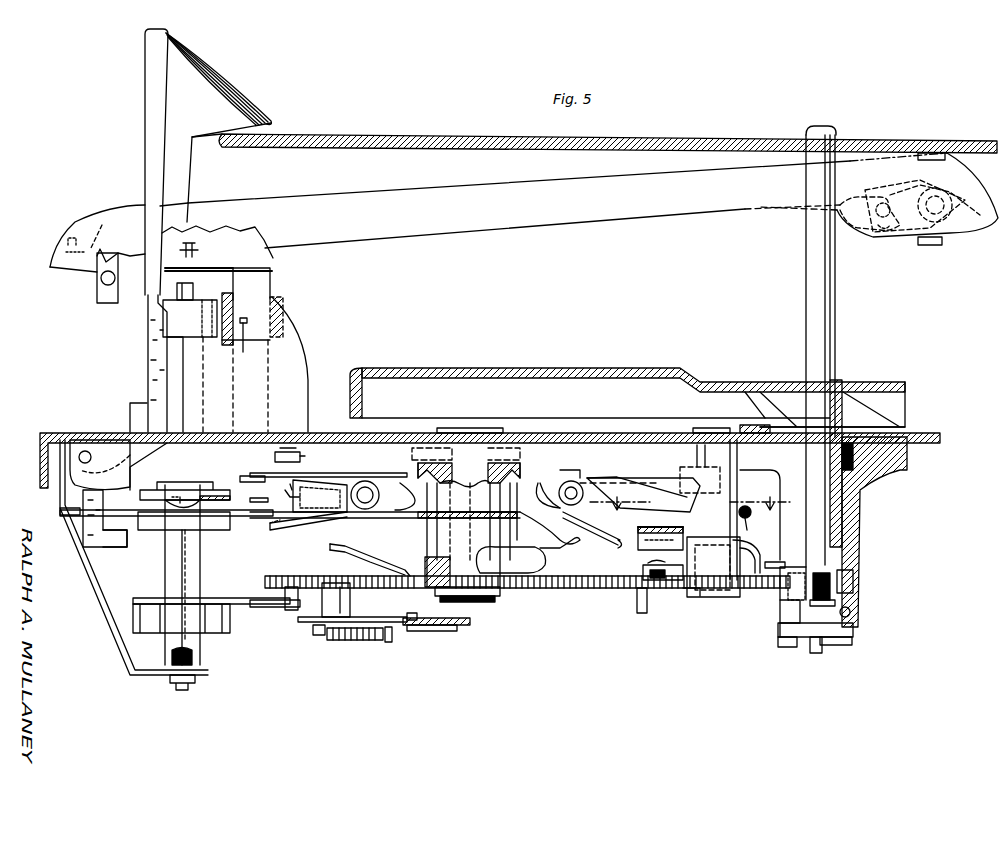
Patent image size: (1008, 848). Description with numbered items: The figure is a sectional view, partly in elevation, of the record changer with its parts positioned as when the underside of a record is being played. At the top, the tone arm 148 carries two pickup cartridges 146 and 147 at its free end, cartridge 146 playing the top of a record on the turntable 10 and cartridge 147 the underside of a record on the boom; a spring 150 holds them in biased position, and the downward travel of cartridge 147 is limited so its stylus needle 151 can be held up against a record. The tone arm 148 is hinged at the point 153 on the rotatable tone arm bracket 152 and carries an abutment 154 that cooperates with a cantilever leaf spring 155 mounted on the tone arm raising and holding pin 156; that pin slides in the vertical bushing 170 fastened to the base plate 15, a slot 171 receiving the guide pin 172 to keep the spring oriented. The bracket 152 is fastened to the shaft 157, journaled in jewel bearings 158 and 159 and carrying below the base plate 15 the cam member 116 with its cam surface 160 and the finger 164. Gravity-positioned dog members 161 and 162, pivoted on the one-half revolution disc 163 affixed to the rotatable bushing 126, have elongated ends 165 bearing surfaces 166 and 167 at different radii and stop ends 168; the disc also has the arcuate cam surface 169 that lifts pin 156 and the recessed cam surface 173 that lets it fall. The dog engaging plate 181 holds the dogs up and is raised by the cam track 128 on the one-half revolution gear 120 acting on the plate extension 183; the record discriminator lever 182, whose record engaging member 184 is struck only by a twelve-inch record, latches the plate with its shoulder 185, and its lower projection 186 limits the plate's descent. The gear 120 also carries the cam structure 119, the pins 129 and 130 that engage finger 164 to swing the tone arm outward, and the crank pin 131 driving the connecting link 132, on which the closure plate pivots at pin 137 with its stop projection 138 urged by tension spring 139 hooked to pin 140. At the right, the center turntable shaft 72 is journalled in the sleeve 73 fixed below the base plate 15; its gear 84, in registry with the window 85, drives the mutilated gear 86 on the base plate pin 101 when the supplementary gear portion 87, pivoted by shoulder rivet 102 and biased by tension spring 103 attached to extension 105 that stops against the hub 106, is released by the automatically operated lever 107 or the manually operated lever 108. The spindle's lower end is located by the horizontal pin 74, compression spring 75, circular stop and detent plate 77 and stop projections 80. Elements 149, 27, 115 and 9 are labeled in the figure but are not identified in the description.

The record engaging member 184 is at (258, 101).
The tone arm 148 is at (576, 208).
The pickup cartridge 146 is at (925, 240).
The pickup cartridge 147 is at (925, 173).
The wheel 149 is at (965, 237).
The spring 150 is at (912, 228).
The stylus needle 151 is at (928, 152).
The hinge point 153 is at (100, 280).
The tone arm bracket 152 is at (97, 298).
The abutment 154 is at (200, 246).
The cantilever leaf spring 155 is at (235, 269).
The tone arm raising and holding pin 156 is at (272, 272).
The jewel bearing 158 is at (205, 290).
The slot 171 is at (285, 300).
The vertical bushing 170 is at (308, 350).
The guide pin 172 is at (249, 343).
The record discriminator lever 182 is at (146, 356).
The lower discriminator lever projection 186 is at (130, 540).
The base plate 15 is at (90, 434).
The turntable 10 is at (576, 375).
The center turntable shaft 72 is at (850, 412).
The column rod 27 is at (830, 318).
The sleeve 73 is at (858, 512).
The compression spring 75 is at (832, 575).
The gear 84 is at (855, 580).
The circular stop and detent plate 77 is at (855, 630).
The stop projections 80 is at (778, 645).
The horizontal pin 74 is at (822, 650).
The window 85 is at (780, 612).
The one-half revolution gear 120 is at (580, 590).
The rotatable bushing 126 is at (425, 545).
The dog member ends 168 is at (410, 462).
The collar 115 is at (505, 542).
The cam structure 119 is at (537, 566).
The dog engaging plate 181 is at (390, 517).
The elongated end 165 is at (300, 535).
The cam track 128 is at (350, 557).
The plate extension 183 is at (580, 542).
The dog member 162 is at (336, 507).
The cam surface 160 is at (276, 498).
The dog surface 166 is at (300, 492).
The dog surface 167 is at (265, 527).
The arcuate cam surface 169 is at (330, 455).
The one-half revolution disc 163 is at (585, 465).
The recessed cam surface 173 is at (678, 458).
The dog member 161 is at (550, 495).
The section line 9 is at (690, 512).
The base plate pin 101 is at (738, 488).
The automatically operated record changing lever 107 is at (650, 525).
The manually operated record changing lever 108 is at (757, 525).
The shoulder rivet 102 is at (765, 562).
The extension 105 is at (640, 573).
The tension spring 103 is at (645, 565).
The mutilated gear hub 106 is at (700, 597).
The supplementary gear portion 87 is at (750, 590).
The mutilated gear 86 is at (685, 596).
The pin 130 is at (640, 615).
The cam member 116 is at (140, 494).
The discriminator shoulder 185 is at (60, 508).
The tone arm vertical shaft 157 is at (210, 563).
The jewel bearing 159 is at (192, 666).
The finger 164 is at (250, 602).
The pin 129 is at (285, 608).
The crank pin 131 is at (352, 598).
The connecting link 132 is at (300, 624).
The pin 137 is at (440, 632).
The stop projection 138 is at (410, 612).
The tension spring 139 is at (360, 642).
The pin 140 is at (389, 644).